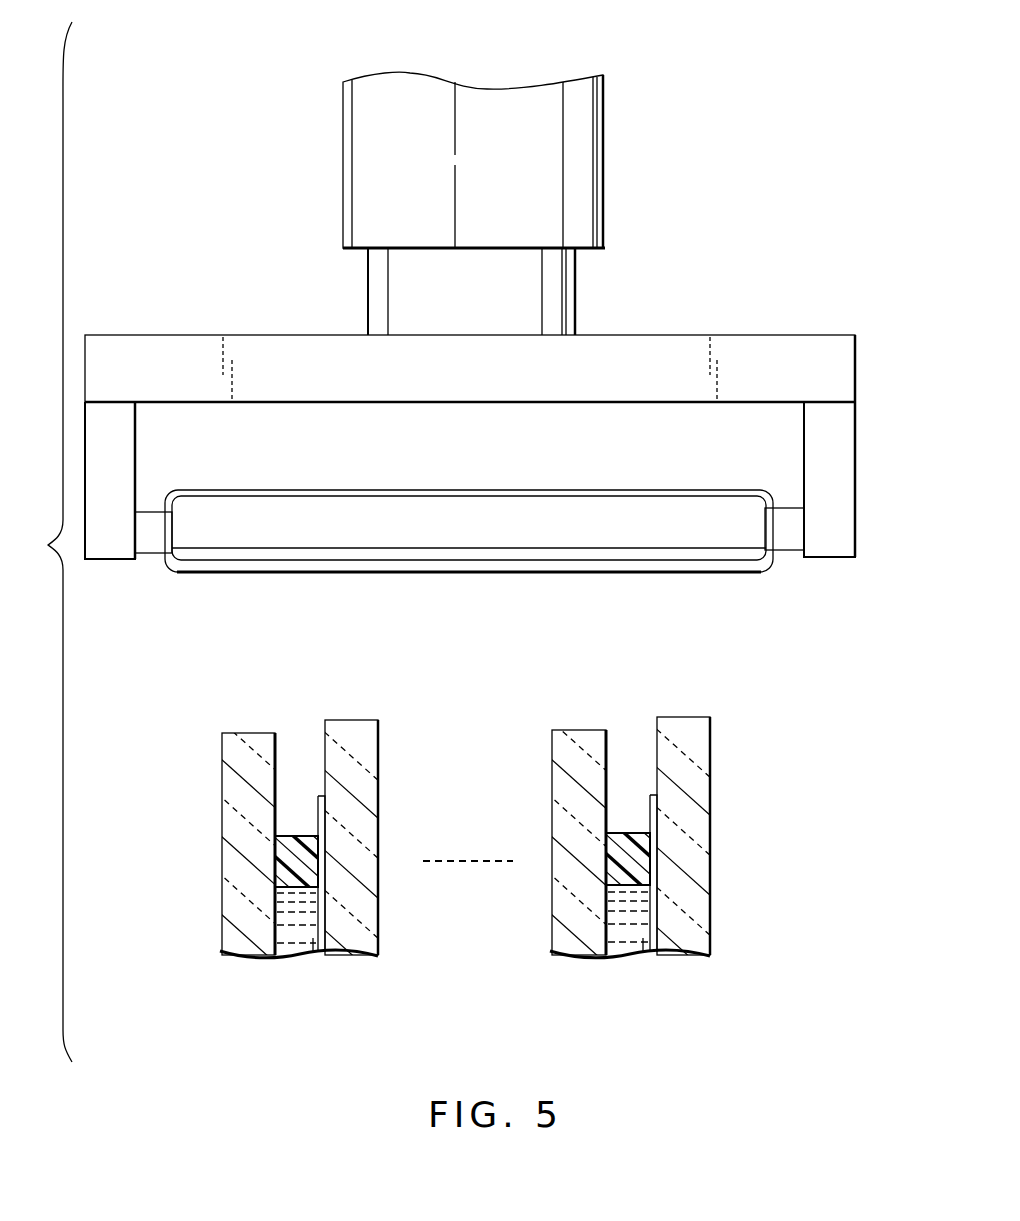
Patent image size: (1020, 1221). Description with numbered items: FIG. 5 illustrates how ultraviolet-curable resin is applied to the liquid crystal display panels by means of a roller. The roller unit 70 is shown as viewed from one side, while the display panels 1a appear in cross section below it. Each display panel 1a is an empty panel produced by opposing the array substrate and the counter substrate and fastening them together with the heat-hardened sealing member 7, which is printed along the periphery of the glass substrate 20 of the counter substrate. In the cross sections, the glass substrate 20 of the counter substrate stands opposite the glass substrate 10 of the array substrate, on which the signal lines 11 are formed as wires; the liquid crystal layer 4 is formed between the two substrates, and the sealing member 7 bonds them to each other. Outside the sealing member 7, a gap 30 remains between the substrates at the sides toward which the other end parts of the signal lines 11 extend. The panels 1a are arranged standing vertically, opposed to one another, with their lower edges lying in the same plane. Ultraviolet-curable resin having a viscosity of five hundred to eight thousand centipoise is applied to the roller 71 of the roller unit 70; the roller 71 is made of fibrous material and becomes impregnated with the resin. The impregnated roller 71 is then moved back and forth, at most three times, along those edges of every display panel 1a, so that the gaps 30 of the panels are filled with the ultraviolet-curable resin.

The roller unit 70 is at (615, 259).
The roller 71 is at (705, 574).
The glass substrate 20 is at (233, 782).
The glass substrate 10 is at (370, 788).
The gap 30 is at (318, 803).
The sealing member 7 is at (285, 857).
The liquid crystal layer 4 is at (300, 945).
The signal lines 11 is at (312, 940).
The display panel 1a is at (250, 972).